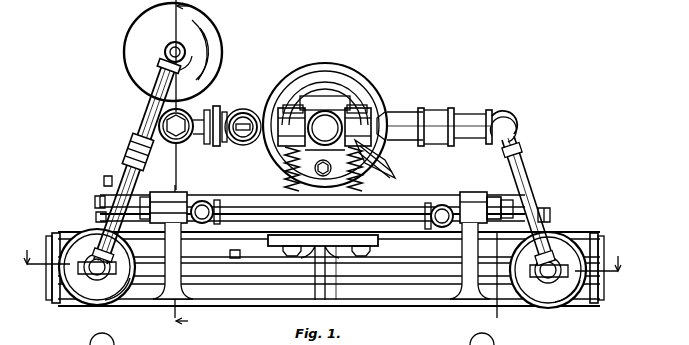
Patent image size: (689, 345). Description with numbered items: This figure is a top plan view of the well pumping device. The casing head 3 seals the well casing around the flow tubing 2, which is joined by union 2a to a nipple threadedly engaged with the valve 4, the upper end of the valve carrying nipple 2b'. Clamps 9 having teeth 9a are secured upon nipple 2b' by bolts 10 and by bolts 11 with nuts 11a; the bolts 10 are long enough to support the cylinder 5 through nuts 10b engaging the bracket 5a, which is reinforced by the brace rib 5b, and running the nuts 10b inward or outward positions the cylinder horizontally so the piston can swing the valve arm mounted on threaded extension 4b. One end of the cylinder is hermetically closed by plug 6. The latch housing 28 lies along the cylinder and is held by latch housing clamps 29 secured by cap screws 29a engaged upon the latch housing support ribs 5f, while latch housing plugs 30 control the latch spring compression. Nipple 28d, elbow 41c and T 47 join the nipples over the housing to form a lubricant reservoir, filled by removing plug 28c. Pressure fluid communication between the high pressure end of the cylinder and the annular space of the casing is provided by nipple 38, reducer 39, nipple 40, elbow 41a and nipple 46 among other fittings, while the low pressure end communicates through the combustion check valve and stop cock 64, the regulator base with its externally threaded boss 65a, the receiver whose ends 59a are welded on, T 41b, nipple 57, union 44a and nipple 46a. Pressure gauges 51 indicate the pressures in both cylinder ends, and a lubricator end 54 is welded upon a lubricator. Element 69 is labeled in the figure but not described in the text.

The flow tubing 2 is at (320, 250).
The union 2a is at (172, 190).
The nipple 2b' is at (325, 87).
The casing head 3 is at (334, 100).
The valve 4 is at (372, 158).
The threaded extension 4b is at (313, 166).
The cylinder 5 is at (440, 282).
The bracket 5a is at (375, 250).
The brace rib 5b is at (315, 250).
The latch housing support ribs 5f is at (168, 240).
The plug 6 is at (56, 279).
The clamps 9 is at (300, 104).
The teeth 9a is at (356, 106).
The bolts 10 is at (372, 184).
The nuts 10b is at (282, 250).
The bolts 11 is at (366, 108).
The nuts 11a is at (388, 124).
The latch housing 28 is at (182, 170).
The plug 28c is at (458, 190).
The nipple 28d is at (268, 214).
The latch housing clamps 29 is at (478, 192).
The cap screws 29a is at (514, 200).
The latch housing plugs 30 is at (98, 198).
The nipple 38 is at (432, 108).
The reducer 39 is at (446, 118).
The nipple 40 is at (488, 105).
The elbow 41a is at (502, 125).
The T 41b is at (166, 52).
The elbow 41c is at (206, 205).
The union 44a is at (124, 156).
The nipple 46 is at (512, 158).
The nipple 46a is at (104, 180).
The T 47 is at (430, 186).
The pressure gauges 51 is at (58, 298).
The lubricator end 54 is at (72, 236).
The nipple 57 is at (160, 84).
The ends 59a is at (148, 25).
The combustion check valve and stop cock 64 is at (244, 112).
The externally threaded boss 65a is at (228, 112).
The coupling ring 69 is at (214, 95).